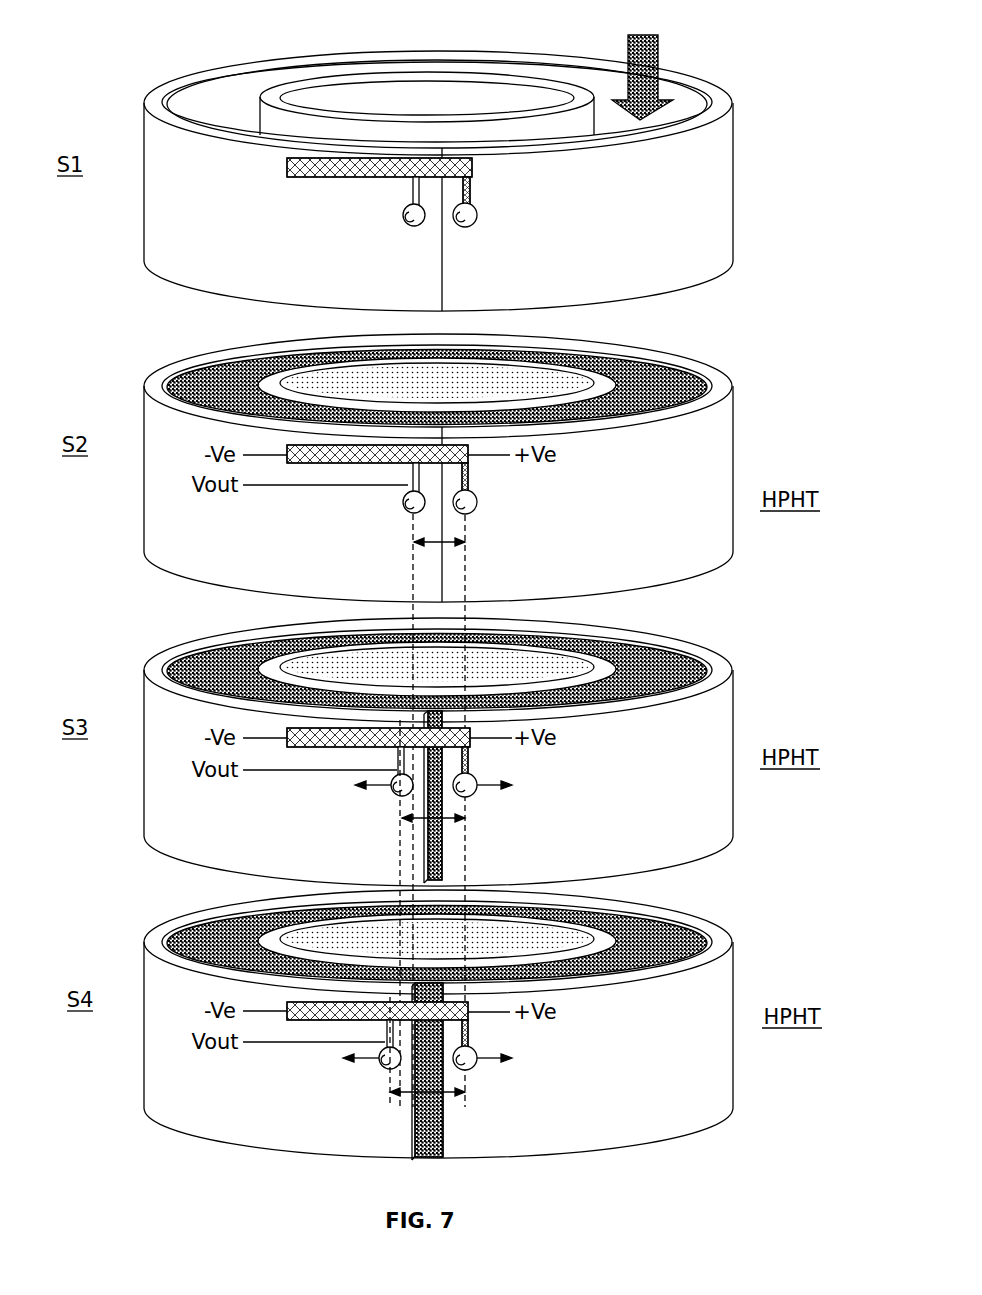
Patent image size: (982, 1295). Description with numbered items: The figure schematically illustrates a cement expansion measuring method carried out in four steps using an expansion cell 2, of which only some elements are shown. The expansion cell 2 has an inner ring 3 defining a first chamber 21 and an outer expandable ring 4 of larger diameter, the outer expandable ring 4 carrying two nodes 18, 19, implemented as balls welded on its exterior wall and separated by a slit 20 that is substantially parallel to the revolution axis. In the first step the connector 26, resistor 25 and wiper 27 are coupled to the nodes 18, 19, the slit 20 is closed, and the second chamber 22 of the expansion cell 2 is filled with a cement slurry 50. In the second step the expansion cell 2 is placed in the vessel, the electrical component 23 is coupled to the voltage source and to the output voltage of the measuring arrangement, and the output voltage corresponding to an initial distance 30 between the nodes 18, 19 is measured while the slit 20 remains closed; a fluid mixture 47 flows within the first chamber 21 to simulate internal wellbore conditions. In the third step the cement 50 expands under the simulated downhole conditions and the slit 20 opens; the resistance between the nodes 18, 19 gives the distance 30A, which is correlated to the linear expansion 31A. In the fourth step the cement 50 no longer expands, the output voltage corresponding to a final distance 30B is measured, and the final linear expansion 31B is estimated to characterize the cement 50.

The expansion cell 2 is at (742, 230).
The inner ring 3 is at (468, 73).
The outer expandable ring 4 is at (727, 153).
The node 18 is at (474, 217).
The node 19 is at (408, 217).
The slit 20 is at (442, 243).
The first chamber 21 is at (407, 113).
The second chamber 22 is at (209, 114).
The electrical component 23 is at (528, 486).
The resistor 25 is at (288, 170).
The connector 26 is at (472, 192).
The wiper 27 is at (413, 185).
The distance 30 is at (439, 560).
The distance 30A is at (433, 834).
The final distance 30B is at (427, 1107).
The linear expansion 31A is at (585, 688).
The final linear expansion 31B is at (595, 960).
The fluid mixture 47 is at (412, 391).
The cement slurry 50 is at (630, 86).